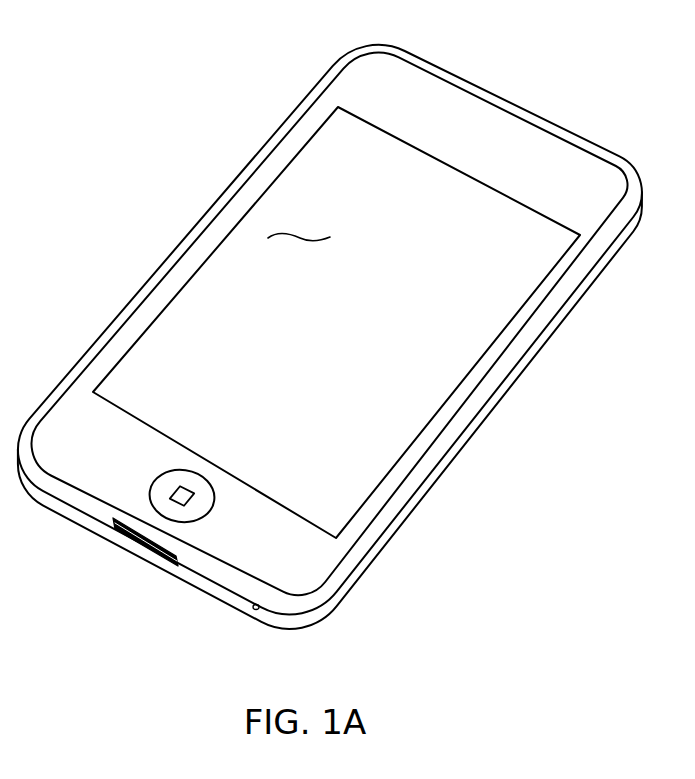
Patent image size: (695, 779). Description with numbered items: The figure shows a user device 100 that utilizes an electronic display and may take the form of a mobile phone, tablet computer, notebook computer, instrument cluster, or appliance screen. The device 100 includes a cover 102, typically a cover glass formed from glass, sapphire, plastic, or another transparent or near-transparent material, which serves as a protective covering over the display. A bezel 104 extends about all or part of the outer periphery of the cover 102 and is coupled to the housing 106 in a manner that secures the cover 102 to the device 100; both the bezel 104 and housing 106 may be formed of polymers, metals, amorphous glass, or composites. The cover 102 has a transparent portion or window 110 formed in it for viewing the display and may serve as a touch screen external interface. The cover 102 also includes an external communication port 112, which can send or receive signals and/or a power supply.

The device 100 is at (579, 85).
The cover 102 is at (403, 418).
The bezel 104 is at (134, 314).
The housing 106 is at (543, 349).
The window 110 is at (300, 235).
The external communication port 112 is at (142, 550).